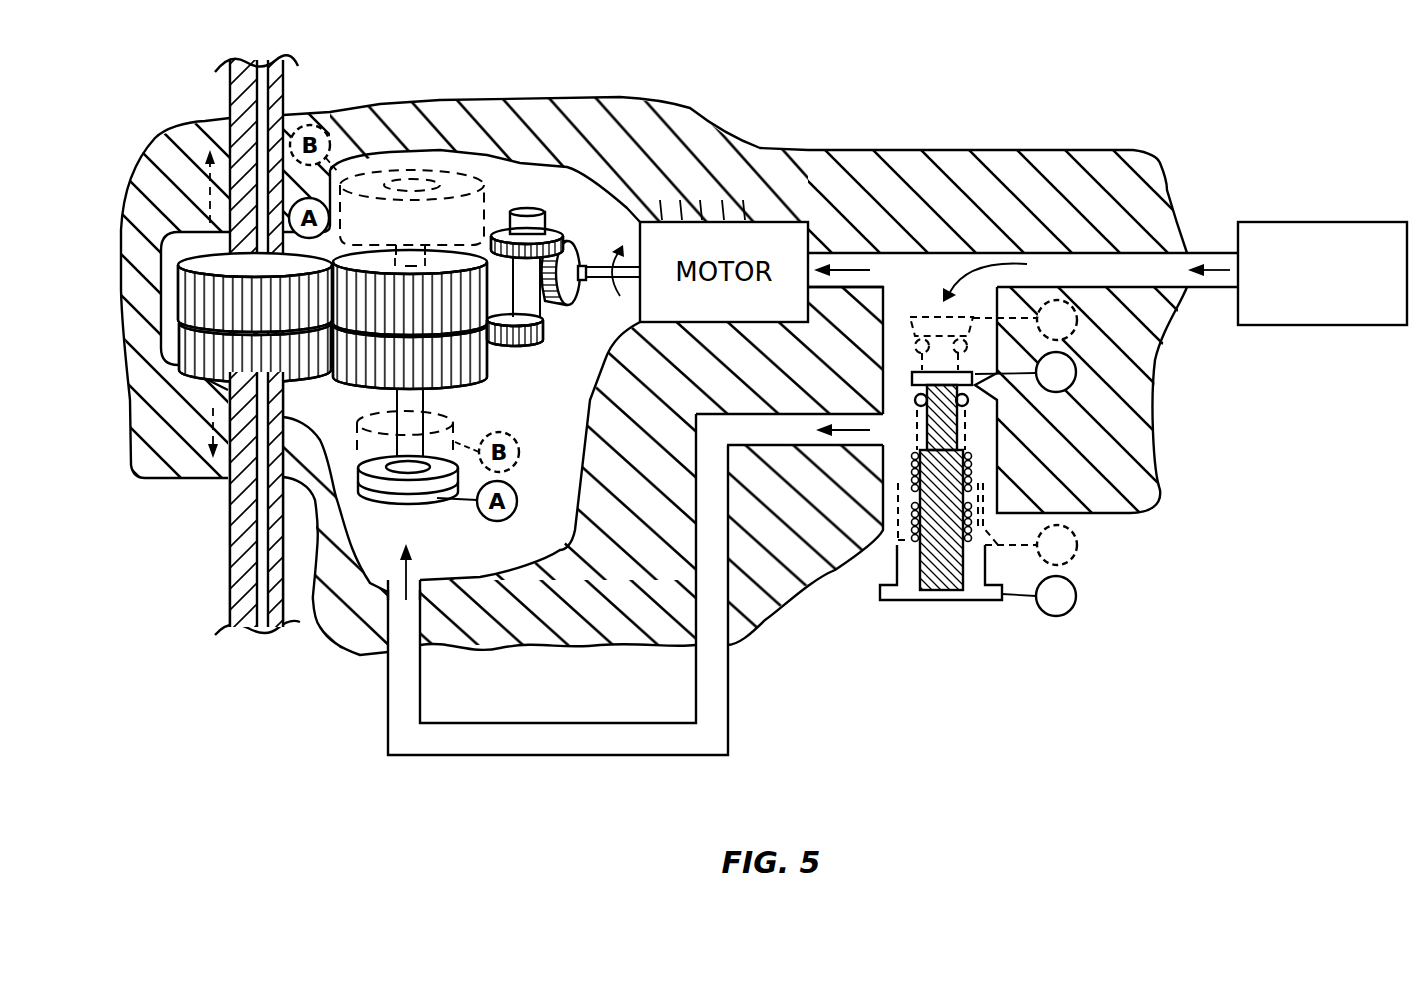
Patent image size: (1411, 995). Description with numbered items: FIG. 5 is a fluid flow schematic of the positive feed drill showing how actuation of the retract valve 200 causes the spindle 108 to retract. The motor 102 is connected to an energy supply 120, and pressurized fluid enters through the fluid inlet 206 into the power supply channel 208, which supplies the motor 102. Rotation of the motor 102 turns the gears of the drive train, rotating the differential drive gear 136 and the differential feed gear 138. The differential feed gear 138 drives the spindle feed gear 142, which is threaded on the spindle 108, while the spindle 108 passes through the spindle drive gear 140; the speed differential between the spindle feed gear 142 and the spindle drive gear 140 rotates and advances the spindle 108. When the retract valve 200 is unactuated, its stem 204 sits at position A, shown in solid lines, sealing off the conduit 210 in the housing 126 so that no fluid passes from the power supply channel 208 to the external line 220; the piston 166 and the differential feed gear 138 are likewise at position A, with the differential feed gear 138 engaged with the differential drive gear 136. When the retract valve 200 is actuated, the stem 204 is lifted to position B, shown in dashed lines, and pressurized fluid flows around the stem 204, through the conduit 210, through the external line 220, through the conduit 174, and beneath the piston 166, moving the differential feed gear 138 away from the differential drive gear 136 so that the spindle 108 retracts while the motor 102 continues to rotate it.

The motor 102 is at (785, 210).
The spindle 108 is at (230, 580).
The energy supply 120 is at (1327, 222).
The housing 126 is at (963, 168).
The differential drive gear 136 is at (367, 350).
The differential feed gear 138 is at (486, 167).
The spindle drive gear 140 is at (210, 343).
The spindle feed gear 142 is at (205, 298).
The piston 166 is at (458, 438).
The conduit 174 is at (405, 625).
The retract valve 200 is at (1057, 502).
The valve stem 204 is at (940, 432).
The fluid inlet 206 is at (1093, 258).
The power supply channel 208 is at (868, 268).
The conduit 210 is at (793, 447).
The external line 220 is at (380, 706).